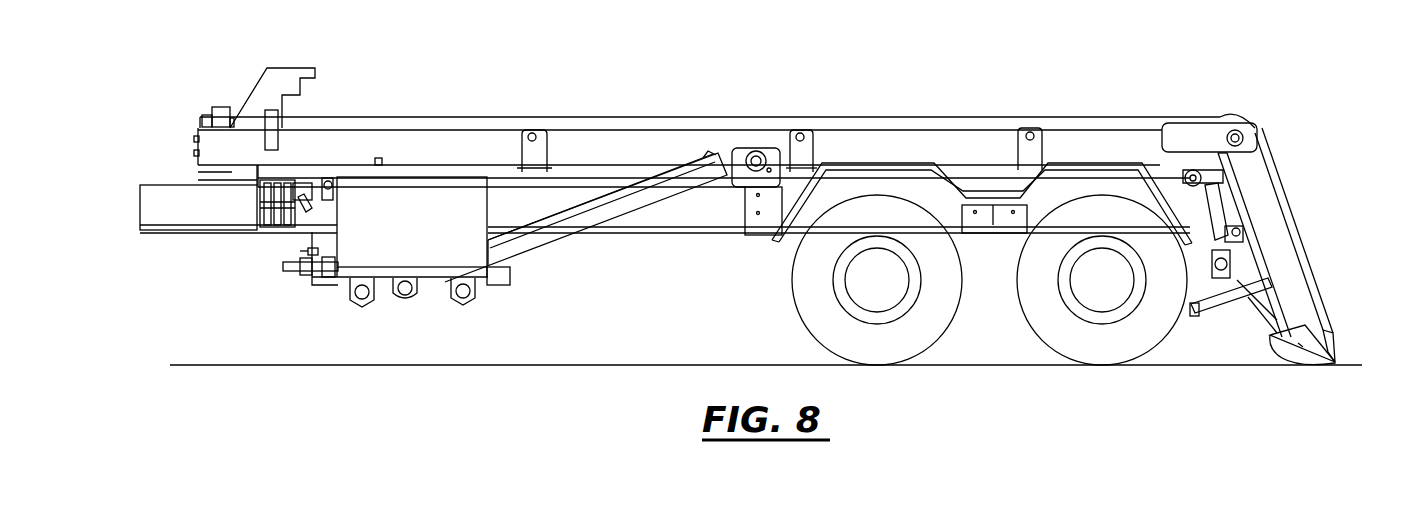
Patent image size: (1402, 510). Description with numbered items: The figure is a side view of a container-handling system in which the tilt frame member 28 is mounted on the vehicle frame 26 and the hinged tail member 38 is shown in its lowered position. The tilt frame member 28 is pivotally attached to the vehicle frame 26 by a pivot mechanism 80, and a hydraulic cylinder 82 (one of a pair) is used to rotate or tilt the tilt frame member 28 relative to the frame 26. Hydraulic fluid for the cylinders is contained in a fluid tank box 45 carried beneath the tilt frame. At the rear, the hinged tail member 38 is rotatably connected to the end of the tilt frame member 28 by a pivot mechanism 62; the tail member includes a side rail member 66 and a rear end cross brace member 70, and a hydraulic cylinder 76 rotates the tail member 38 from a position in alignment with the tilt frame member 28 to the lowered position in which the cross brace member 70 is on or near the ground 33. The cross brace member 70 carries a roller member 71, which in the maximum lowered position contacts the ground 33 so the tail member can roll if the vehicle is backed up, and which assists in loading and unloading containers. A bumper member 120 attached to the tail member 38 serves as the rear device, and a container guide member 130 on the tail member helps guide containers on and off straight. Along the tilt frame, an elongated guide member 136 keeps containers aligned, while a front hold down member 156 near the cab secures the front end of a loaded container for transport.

The vehicle frame 26 is at (693, 215).
The tilt frame member 28 is at (482, 143).
The ground 33 is at (1013, 367).
The hinged tail member 38 is at (1248, 198).
The fluid tank box 45 is at (362, 233).
The pivot mechanism 62 is at (1245, 128).
The side rail member 66 is at (1268, 237).
The rear end cross brace member 70 is at (1323, 367).
The roller member 71 is at (1295, 367).
The hydraulic cylinder 76 is at (1238, 268).
The pivot mechanism 80 is at (1195, 172).
The hydraulic cylinder 82 is at (545, 240).
The bumper member 120 is at (1200, 312).
The container guide member 130 is at (1323, 322).
The elongated guide member 136 is at (912, 122).
The front hold down member 156 is at (290, 70).